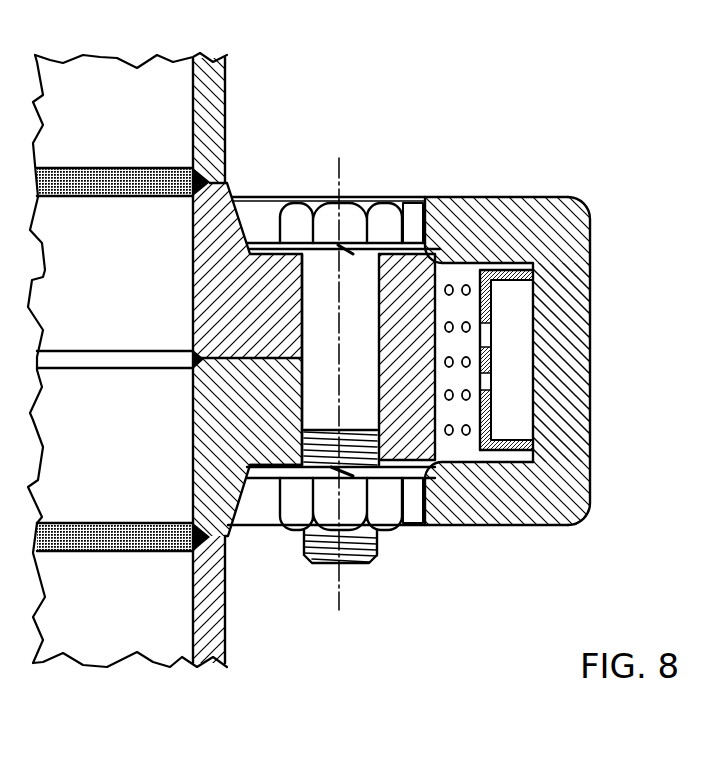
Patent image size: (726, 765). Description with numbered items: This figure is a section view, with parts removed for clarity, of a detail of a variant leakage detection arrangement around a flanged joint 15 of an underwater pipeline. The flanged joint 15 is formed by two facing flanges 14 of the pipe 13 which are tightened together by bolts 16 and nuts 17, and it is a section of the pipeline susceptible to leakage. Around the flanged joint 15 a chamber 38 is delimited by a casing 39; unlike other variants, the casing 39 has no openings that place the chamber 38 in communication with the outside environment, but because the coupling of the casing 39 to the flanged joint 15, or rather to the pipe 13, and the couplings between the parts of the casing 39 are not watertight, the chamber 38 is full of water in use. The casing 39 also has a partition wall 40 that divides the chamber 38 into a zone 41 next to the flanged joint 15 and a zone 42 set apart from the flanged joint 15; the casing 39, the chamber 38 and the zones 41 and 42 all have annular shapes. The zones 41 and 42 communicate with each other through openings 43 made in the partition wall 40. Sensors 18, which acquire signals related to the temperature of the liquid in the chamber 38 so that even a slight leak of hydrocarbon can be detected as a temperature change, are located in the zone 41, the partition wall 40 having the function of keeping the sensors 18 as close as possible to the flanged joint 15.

The pipe 13 is at (212, 80).
The flanges 14 is at (412, 262).
The flanged joint 15 is at (396, 148).
The bolts 16 is at (347, 212).
The nuts 17 is at (387, 537).
The sensors 18 is at (444, 290).
The chamber 38 is at (532, 365).
The casing 39 is at (534, 530).
The partition wall 40 is at (495, 427).
The zone 41 is at (459, 310).
The zone 42 is at (515, 307).
The openings 43 is at (503, 333).